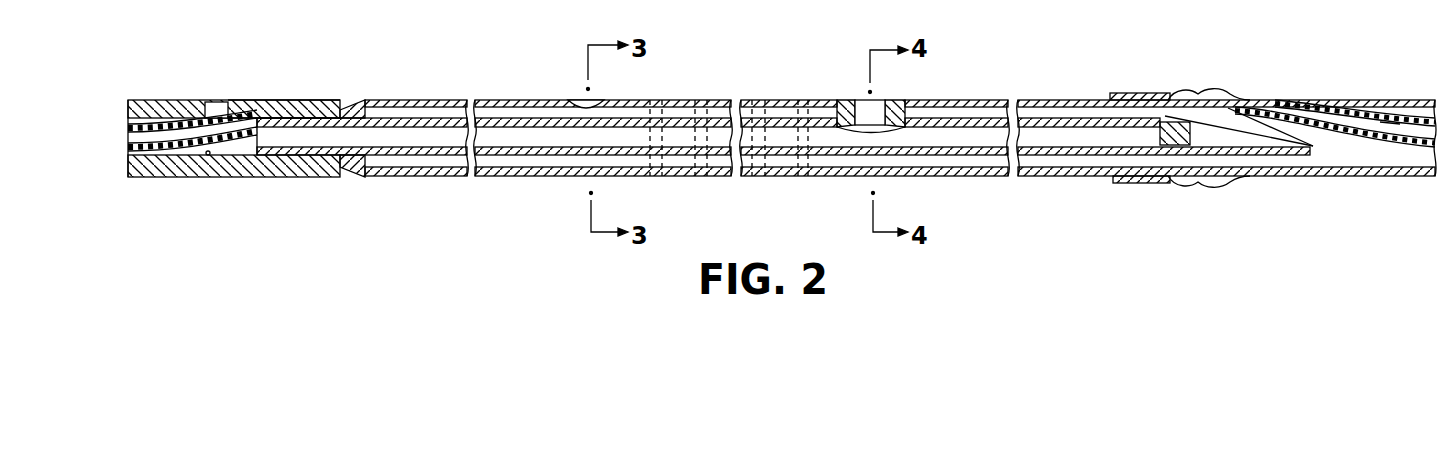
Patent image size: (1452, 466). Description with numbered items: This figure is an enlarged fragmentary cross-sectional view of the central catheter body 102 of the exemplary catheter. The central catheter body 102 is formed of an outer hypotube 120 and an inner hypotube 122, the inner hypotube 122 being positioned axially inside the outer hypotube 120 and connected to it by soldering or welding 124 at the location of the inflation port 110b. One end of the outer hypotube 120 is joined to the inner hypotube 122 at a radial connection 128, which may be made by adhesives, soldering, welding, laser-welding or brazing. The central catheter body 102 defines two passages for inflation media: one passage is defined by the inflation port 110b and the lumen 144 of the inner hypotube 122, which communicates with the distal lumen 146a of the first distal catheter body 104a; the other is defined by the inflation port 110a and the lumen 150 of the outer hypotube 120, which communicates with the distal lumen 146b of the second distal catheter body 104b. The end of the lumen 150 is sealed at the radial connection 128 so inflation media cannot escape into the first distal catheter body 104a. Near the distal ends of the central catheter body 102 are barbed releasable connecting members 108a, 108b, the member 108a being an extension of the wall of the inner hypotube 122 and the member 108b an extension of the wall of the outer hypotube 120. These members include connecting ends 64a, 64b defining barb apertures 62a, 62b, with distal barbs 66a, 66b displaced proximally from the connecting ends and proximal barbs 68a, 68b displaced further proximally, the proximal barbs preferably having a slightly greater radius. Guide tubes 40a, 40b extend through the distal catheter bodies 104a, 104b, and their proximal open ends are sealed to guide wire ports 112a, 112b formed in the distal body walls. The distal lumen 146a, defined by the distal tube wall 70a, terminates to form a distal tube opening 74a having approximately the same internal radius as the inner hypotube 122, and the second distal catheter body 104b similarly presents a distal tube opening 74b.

The central catheter body 102 is at (430, 65).
The outer hypotube 120 is at (498, 100).
The lumen of inner hypotube 144 is at (978, 138).
The inner hypotube 122 is at (773, 123).
The soldering or welding 124 is at (845, 102).
The inflation port 110a is at (577, 98).
The inflation port 110b is at (878, 107).
The first distal catheter body 104a is at (293, 170).
The guide wire port 112a is at (217, 108).
The proximal barb 68a is at (290, 110).
The distal barb 66a is at (285, 114).
The distal tube opening 74a is at (347, 102).
The barbed connecting member 108a is at (338, 170).
The radial connection 128 is at (360, 102).
The guide tube 40a is at (152, 115).
The barb aperture 62a is at (210, 152).
The connecting end 64a is at (255, 137).
The distal tube wall 70a is at (207, 153).
The distal lumen 146a is at (178, 155).
The lumen of outer hypotube 150 is at (1053, 112).
The distal tube opening 74b is at (1113, 175).
The barbed connecting member 108b is at (1138, 93).
The second distal catheter body 104b is at (1147, 178).
The proximal barb 68b is at (1170, 185).
The distal barb 66b is at (1203, 185).
The barb aperture 62b is at (1230, 112).
The connecting end 64b is at (1233, 173).
The guide wire port 112b is at (1282, 98).
The guide tube 40b is at (1380, 127).
The distal lumen 146b is at (1355, 162).